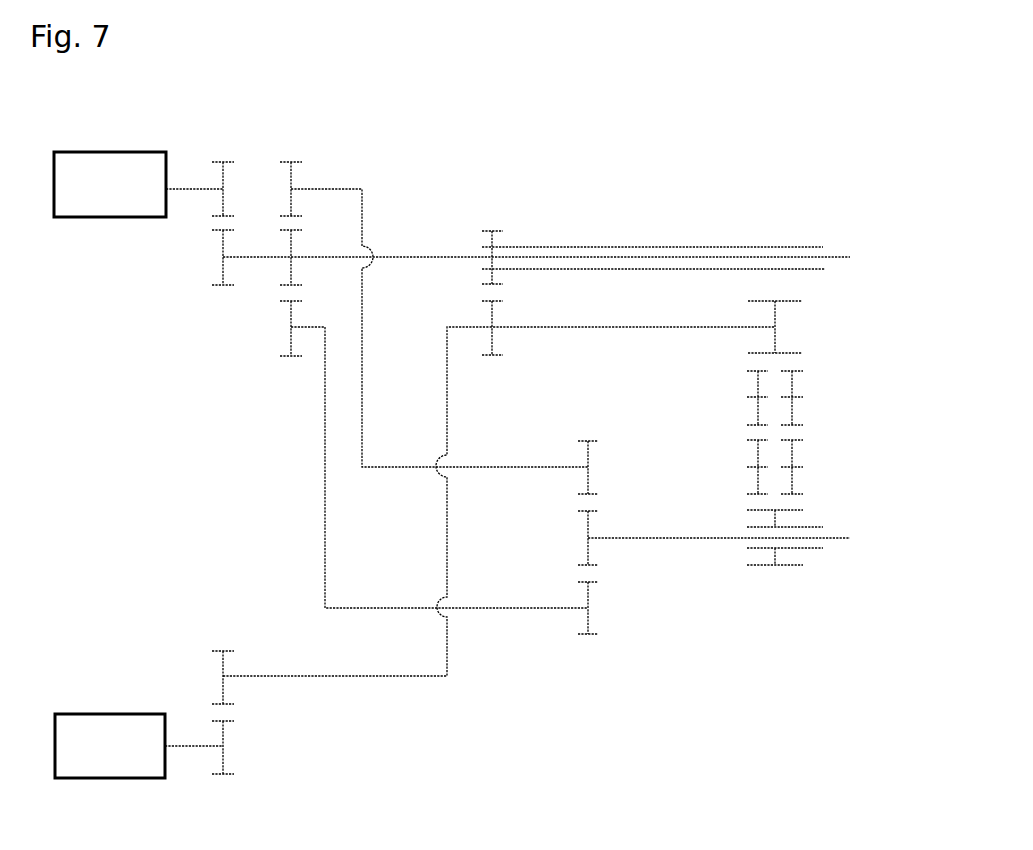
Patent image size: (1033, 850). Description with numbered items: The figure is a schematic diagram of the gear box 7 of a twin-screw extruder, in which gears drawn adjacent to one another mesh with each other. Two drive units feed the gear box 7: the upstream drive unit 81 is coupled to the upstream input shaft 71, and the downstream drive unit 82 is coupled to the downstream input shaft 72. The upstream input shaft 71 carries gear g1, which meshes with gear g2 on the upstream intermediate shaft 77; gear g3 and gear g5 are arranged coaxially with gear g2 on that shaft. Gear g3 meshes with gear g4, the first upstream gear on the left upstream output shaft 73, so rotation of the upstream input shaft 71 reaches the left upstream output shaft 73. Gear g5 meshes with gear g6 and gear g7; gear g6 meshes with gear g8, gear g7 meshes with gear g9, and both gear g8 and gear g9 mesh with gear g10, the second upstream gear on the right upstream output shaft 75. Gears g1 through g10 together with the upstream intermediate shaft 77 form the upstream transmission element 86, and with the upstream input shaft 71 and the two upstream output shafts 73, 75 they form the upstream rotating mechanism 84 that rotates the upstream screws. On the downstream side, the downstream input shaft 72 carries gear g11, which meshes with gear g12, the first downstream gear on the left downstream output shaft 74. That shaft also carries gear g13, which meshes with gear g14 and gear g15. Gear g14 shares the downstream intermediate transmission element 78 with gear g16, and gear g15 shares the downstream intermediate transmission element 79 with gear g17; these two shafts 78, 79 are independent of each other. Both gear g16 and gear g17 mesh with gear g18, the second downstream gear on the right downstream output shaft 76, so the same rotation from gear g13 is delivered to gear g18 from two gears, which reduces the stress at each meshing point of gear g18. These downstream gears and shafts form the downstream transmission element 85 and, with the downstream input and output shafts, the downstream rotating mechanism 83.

The gear box 7 is at (900, 253).
The upstream input shaft 71 is at (188, 746).
The downstream input shaft 72 is at (182, 189).
The left upstream output shaft 73 is at (797, 245).
The left downstream output shaft 74 is at (835, 256).
The right upstream output shaft 75 is at (810, 525).
The right downstream output shaft 76 is at (837, 537).
The upstream intermediate shaft 77 is at (400, 676).
The downstream intermediate transmission element 78 is at (362, 337).
The downstream intermediate transmission element 79 is at (325, 563).
The upstream drive unit 81 is at (114, 714).
The downstream drive unit 82 is at (103, 217).
The downstream rotating mechanism 83 is at (352, 147).
The upstream rotating mechanism 84 is at (306, 702).
The downstream transmission element 85 is at (276, 442).
The upstream transmission element 86 is at (671, 340).
The gear g1 is at (213, 721).
The gear g2 is at (213, 651).
The gear g3 is at (485, 300).
The gear g4 is at (486, 230).
The gear g5 is at (802, 300).
The gear g6 is at (747, 371).
The gear g7 is at (803, 371).
The gear g8 is at (747, 440).
The gear g9 is at (803, 440).
The gear g10 is at (747, 510).
The gear g11 is at (214, 160).
The gear g12 is at (215, 287).
The gear g13 is at (282, 230).
The gear g14 is at (290, 160).
The gear g15 is at (280, 357).
The gear g16 is at (578, 441).
The gear g17 is at (578, 582).
The gear g18 is at (578, 511).